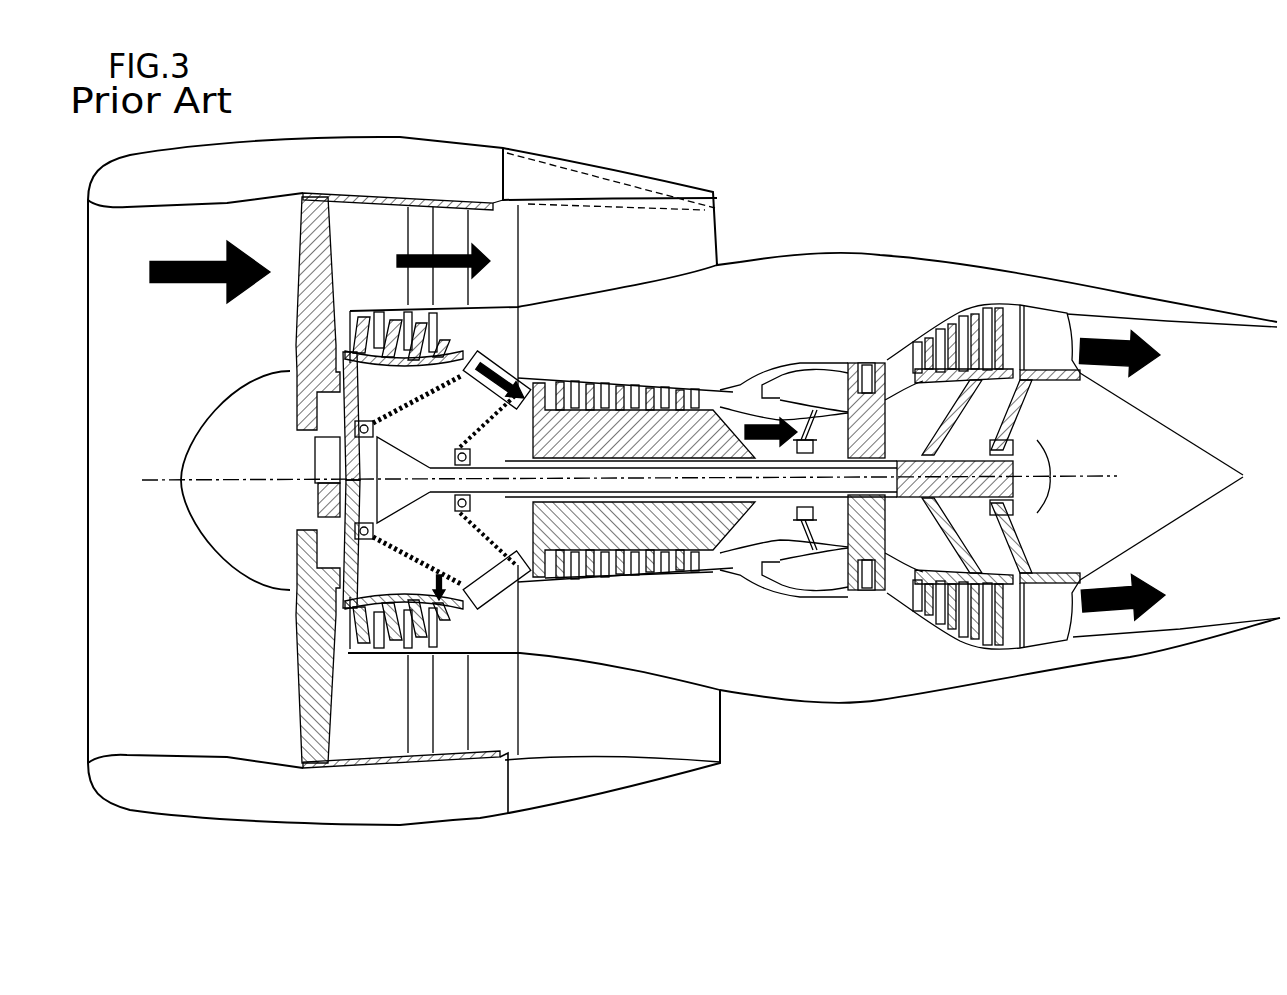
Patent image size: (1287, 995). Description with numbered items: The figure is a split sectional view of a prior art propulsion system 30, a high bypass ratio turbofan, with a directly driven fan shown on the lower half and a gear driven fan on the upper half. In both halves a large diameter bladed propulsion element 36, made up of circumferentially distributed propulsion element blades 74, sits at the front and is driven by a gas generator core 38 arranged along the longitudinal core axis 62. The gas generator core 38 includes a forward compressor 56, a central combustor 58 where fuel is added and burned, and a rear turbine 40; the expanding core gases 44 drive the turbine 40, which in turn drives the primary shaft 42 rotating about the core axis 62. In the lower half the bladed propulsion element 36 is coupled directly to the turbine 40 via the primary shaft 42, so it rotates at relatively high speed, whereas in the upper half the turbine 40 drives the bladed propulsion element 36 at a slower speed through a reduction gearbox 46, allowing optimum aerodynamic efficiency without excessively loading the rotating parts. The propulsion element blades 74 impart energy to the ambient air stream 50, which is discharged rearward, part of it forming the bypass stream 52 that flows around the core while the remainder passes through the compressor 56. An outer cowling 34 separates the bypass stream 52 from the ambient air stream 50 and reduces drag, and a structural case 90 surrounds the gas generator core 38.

The propulsion system 30 is at (1185, 147).
The outer cowling 34 is at (373, 827).
The bladed propulsion element 36 is at (223, 603).
The gas generator core 38 is at (347, 128).
The turbine 40 is at (1000, 297).
The primary shaft 42 is at (497, 457).
The expanding core gases 44 is at (478, 368).
The reduction gearbox 46 is at (315, 460).
The ambient air stream 50 is at (190, 262).
The bypass stream 52 is at (420, 257).
The compressor 56 is at (620, 355).
The combustor 58 is at (780, 358).
The core axis 62 is at (160, 475).
The propulsion element blades 74 is at (337, 257).
The structural case 90 is at (578, 573).